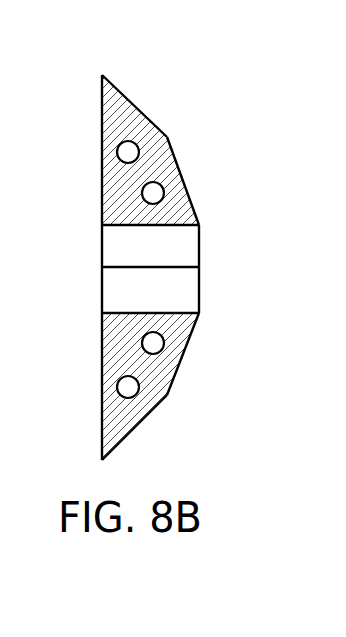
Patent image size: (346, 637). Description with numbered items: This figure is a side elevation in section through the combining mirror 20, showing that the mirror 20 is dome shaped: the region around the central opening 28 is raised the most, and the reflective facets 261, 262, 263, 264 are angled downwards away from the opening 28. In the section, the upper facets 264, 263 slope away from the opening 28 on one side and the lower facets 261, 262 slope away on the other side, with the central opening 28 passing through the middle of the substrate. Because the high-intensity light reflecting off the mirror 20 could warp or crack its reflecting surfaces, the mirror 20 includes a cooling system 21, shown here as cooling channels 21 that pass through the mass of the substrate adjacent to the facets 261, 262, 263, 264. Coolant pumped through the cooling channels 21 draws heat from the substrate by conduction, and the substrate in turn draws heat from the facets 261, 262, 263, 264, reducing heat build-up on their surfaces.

The combining mirror 20 is at (181, 268).
The cooling system 21 is at (128, 152).
The central opening 28 is at (188, 288).
The facet 261 is at (182, 365).
The facet 262 is at (143, 423).
The facet 263 is at (180, 168).
The facet 264 is at (143, 112).